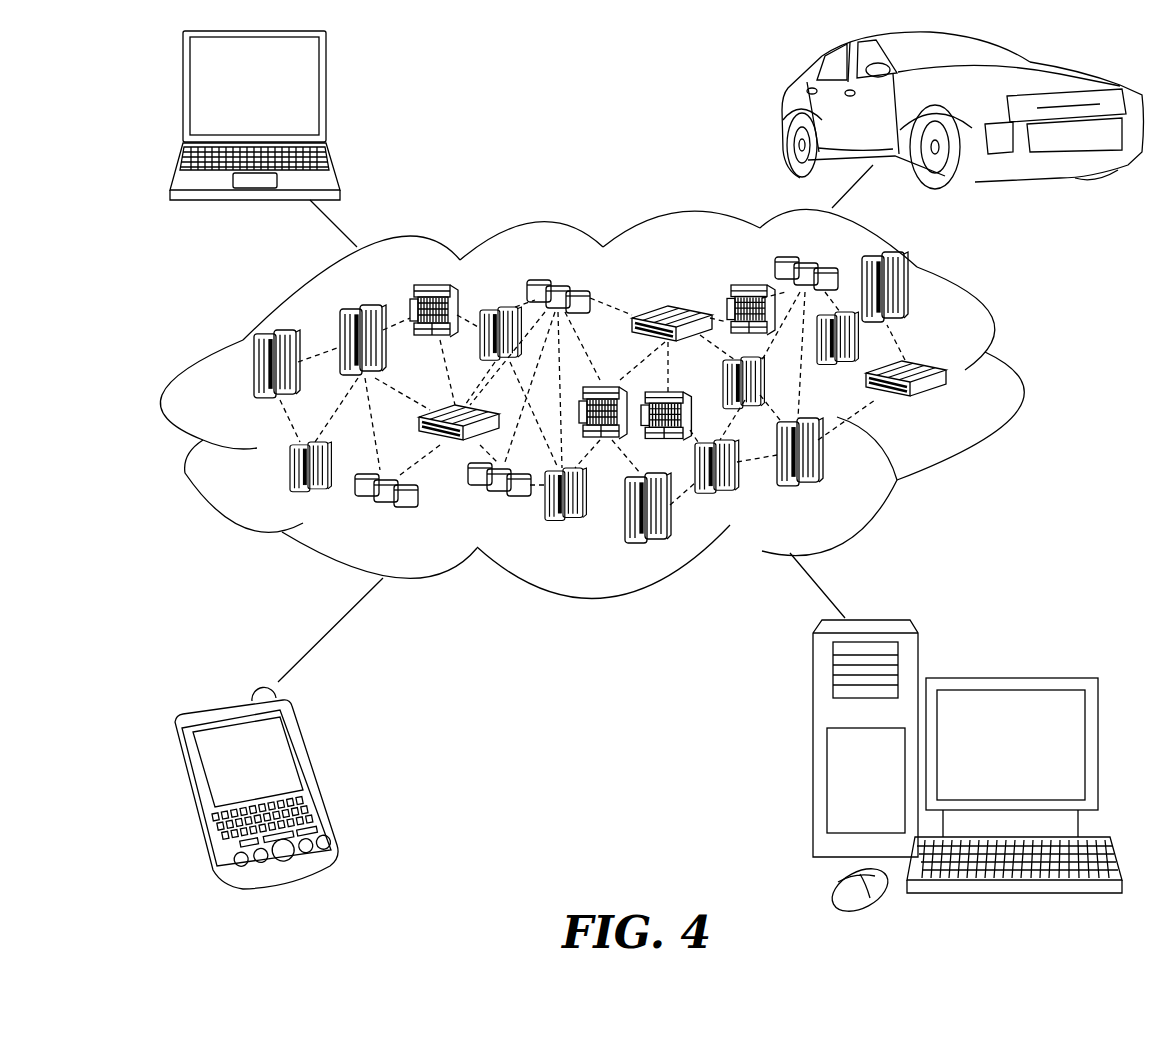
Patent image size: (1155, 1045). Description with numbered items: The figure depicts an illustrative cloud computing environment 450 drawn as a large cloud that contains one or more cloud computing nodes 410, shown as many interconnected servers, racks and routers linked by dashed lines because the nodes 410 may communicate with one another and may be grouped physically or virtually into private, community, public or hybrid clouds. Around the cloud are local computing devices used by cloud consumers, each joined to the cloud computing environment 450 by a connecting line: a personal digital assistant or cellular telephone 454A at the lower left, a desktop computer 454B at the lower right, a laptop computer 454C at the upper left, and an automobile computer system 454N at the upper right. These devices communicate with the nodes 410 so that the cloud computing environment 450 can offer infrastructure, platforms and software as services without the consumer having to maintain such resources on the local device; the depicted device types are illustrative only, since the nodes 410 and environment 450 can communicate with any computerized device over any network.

The laptop computer 454C is at (326, 93).
The automobile computer system 454N is at (780, 110).
The cloud computing environment 450 is at (1015, 377).
The cloud computing nodes 410 is at (948, 408).
The personal digital assistant (PDA) or cellular telephone 454A is at (315, 776).
The desktop computer 454B is at (1010, 676).